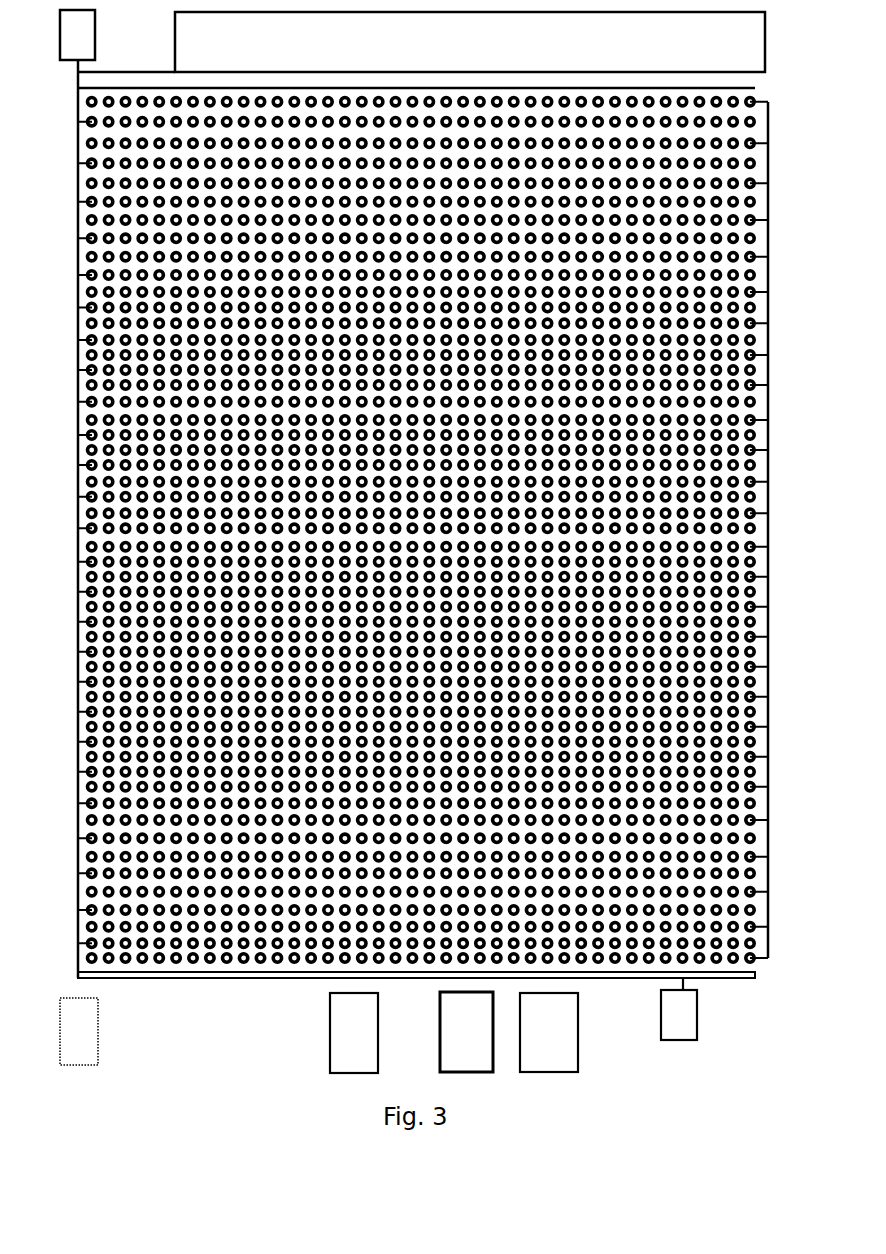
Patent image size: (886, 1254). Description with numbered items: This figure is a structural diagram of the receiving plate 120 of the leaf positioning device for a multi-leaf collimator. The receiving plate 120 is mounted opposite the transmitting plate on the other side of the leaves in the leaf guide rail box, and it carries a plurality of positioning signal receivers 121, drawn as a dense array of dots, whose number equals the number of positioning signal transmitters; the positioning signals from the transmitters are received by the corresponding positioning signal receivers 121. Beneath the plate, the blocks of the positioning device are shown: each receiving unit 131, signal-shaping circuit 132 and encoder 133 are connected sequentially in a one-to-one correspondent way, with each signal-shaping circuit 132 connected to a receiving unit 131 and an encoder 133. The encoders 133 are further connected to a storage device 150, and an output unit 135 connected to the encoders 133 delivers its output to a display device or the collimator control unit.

The receiving plate 120 is at (243, 988).
The positioning signal receivers 121 is at (597, 958).
The receiving unit 131 is at (697, 1017).
The signal-shaping circuit 132 is at (578, 1060).
The encoder 133 is at (440, 1015).
The output unit 135 is at (97, 1027).
The storage device 150 is at (330, 1002).